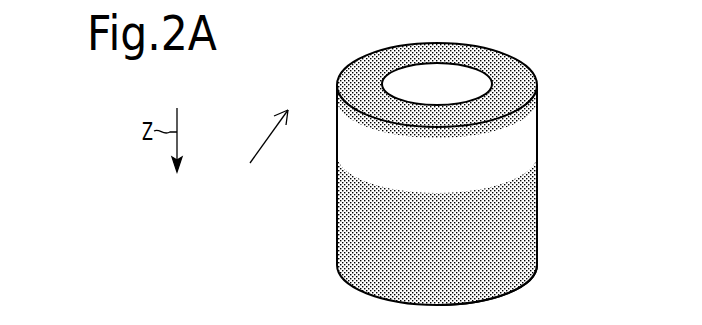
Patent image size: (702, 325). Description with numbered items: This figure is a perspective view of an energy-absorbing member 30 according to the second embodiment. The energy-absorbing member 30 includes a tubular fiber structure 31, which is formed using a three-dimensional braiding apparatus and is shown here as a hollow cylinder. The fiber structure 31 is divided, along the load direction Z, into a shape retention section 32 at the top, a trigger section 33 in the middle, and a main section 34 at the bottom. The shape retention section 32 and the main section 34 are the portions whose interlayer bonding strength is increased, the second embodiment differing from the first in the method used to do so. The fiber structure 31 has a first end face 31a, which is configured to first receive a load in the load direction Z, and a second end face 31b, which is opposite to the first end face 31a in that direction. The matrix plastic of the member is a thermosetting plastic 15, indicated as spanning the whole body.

The thermosetting plastic 15 is at (326, 85).
The energy-absorbing member 30 is at (256, 153).
The fiber structure 31 is at (389, 49).
The first end face 31a is at (497, 64).
The second end face 31b is at (508, 293).
The shape retention section 32 is at (545, 85).
The trigger section 33 is at (545, 115).
The main section 34 is at (545, 165).